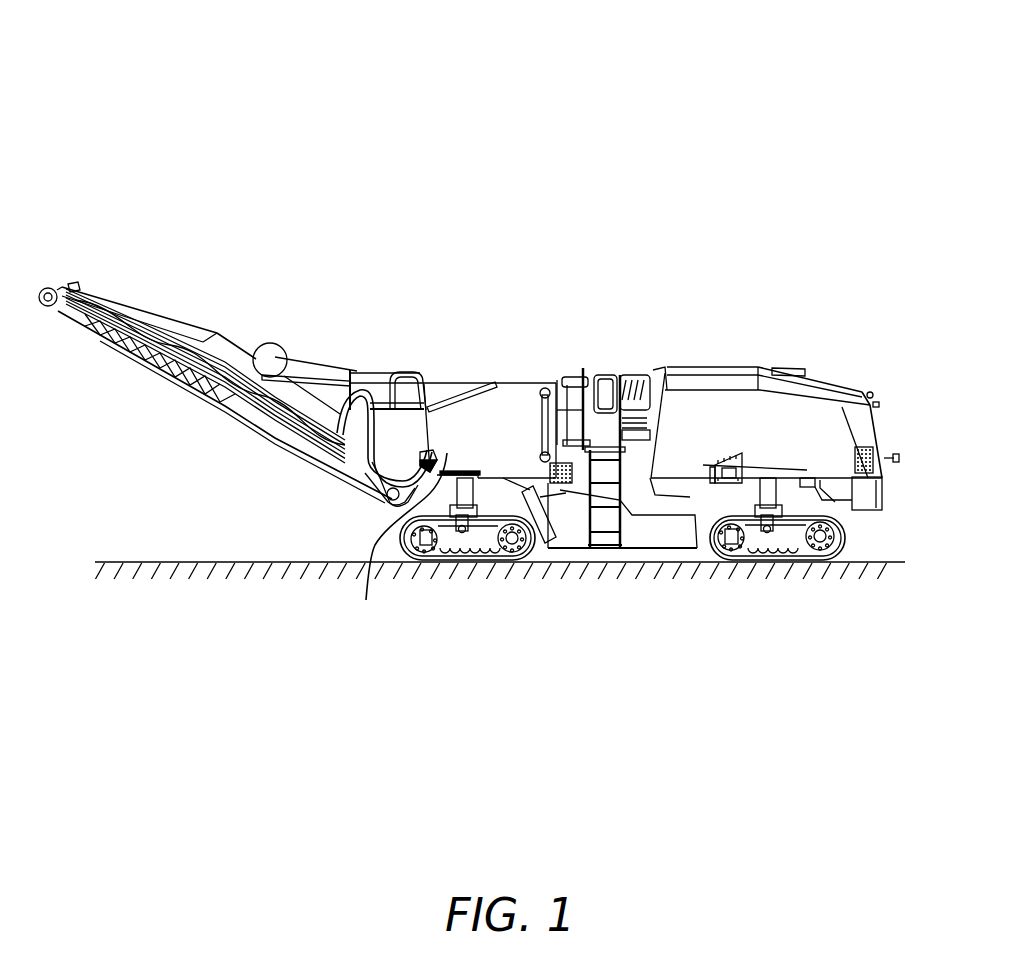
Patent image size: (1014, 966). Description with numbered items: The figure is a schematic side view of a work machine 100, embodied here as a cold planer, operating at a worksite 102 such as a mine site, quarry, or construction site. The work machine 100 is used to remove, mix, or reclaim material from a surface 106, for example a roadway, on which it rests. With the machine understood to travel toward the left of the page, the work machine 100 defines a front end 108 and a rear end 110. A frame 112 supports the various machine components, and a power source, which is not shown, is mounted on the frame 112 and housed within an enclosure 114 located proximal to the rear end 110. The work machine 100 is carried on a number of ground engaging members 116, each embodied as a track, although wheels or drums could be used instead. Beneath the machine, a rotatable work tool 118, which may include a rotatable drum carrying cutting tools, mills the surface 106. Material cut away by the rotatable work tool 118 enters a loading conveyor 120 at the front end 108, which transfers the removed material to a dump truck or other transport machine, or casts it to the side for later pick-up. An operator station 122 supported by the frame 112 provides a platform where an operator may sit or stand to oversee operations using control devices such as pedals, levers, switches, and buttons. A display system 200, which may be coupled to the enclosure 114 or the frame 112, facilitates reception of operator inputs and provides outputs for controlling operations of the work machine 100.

The work machine 100 is at (654, 470).
The worksite 102 is at (498, 325).
The surface 106 is at (888, 560).
The front end 108 is at (362, 322).
The rear end 110 is at (895, 490).
The frame 112 is at (402, 538).
The enclosure 114 is at (795, 423).
The ground engaging members 116 is at (470, 545).
The rotatable work tool 118 is at (612, 549).
The loading conveyor 120 is at (296, 433).
The operator station 122 is at (607, 360).
The display system 200 is at (723, 452).